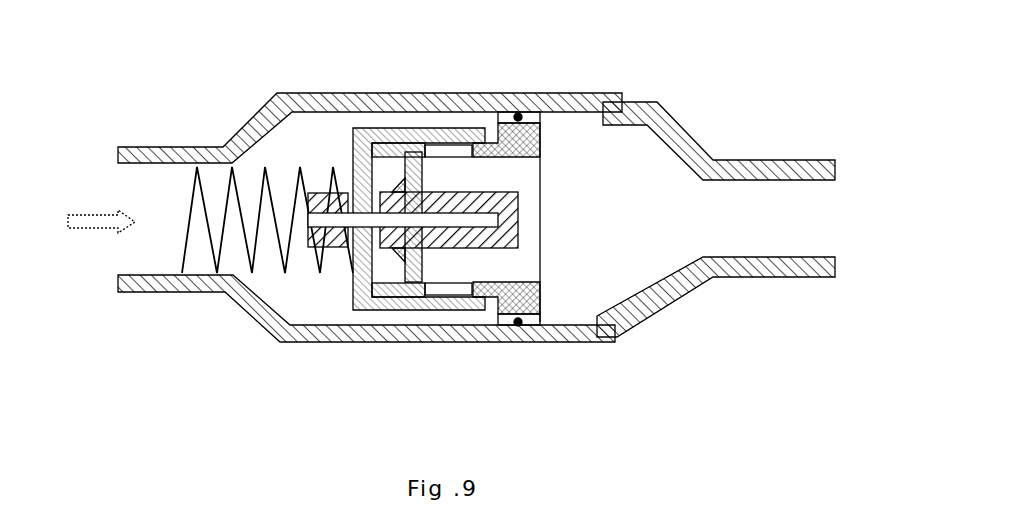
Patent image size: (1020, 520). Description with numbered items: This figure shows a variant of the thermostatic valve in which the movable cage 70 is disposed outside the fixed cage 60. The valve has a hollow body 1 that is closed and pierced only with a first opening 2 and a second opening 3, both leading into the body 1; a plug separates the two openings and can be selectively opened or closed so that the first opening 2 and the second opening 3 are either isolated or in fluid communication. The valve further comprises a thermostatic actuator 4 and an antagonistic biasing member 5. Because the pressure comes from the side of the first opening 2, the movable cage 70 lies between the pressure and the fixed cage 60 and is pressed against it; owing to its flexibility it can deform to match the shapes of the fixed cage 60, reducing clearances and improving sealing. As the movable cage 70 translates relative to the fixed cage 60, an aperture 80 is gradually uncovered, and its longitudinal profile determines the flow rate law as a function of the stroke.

The hollow body 1 is at (673, 124).
The first opening 2 is at (128, 255).
The second opening 3 is at (825, 220).
The thermostatic actuator 4 is at (518, 232).
The biasing member 5 is at (248, 270).
The fixed cage 60 is at (535, 143).
The movable cage 70 is at (373, 312).
The aperture 80 is at (445, 150).